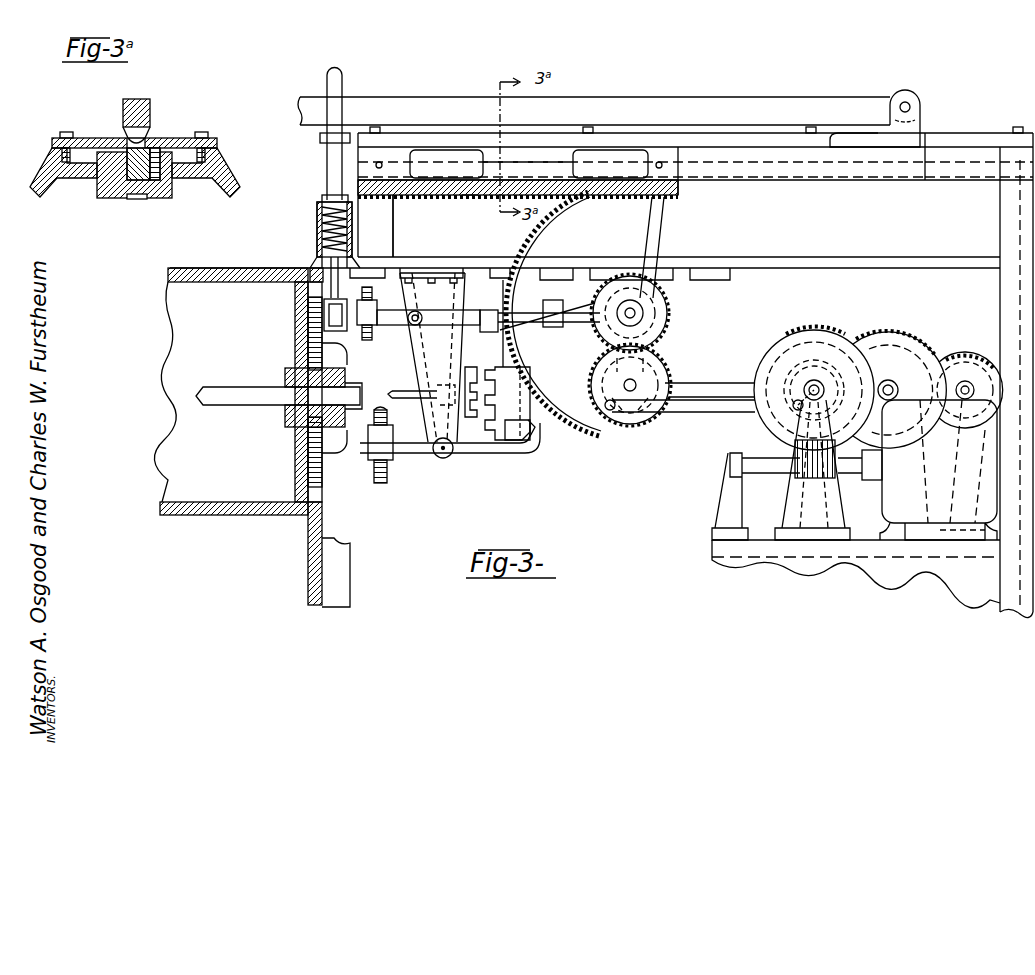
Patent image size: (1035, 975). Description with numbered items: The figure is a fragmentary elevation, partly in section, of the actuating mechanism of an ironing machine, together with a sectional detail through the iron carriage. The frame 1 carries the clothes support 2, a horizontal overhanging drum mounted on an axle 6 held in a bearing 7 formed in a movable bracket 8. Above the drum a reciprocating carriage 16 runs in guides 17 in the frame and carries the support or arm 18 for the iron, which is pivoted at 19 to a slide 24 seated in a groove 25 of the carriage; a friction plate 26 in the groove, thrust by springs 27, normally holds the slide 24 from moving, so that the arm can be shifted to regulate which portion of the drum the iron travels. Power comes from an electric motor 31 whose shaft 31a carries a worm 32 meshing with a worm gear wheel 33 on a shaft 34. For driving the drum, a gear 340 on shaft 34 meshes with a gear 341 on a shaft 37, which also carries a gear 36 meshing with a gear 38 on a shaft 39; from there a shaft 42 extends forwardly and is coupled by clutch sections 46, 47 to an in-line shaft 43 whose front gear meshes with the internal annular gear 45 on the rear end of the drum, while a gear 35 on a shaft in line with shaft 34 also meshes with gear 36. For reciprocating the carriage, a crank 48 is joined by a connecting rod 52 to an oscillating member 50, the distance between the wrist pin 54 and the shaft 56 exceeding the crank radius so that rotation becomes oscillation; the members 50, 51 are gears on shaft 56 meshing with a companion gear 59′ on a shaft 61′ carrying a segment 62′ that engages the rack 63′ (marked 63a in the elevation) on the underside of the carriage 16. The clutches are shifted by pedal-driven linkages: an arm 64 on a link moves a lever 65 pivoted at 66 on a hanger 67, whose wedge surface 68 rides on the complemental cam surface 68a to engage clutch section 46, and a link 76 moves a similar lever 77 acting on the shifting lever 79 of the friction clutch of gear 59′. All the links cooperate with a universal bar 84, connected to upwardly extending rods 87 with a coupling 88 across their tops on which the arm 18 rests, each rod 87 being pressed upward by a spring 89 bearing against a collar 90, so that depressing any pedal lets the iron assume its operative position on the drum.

In FIG. 3, the frame 1 is at (314, 563).
In FIG. 3, the clothes support 2 is at (170, 448).
In FIG. 3, the axle 6 is at (243, 396).
In FIG. 3, the bearing 7 is at (300, 428).
In FIG. 3, the movable bracket 8 is at (331, 445).
In FIG. 3A, the reciprocating carriage 16 is at (100, 185).
In FIG. 3, the reciprocating carriage 16 is at (455, 188).
In FIG. 3A, the guides 17 is at (88, 140).
In FIG. 3, the guides 17 is at (940, 146).
In FIG. 3A, the support or arm 18 is at (148, 100).
In FIG. 3, the support or arm 18 is at (603, 100).
In FIG. 3, the pivot 19 is at (906, 100).
In FIG. 3A, the slide 24 is at (110, 200).
In FIG. 3, the slide 24 is at (772, 172).
In FIG. 3A, the way or groove 25 is at (130, 150).
In FIG. 3, the way or groove 25 is at (402, 178).
In FIG. 3A, the shoe or plate 26 is at (170, 185).
In FIG. 3, the shoe or plate 26 is at (522, 153).
In FIG. 3, the springs 27 is at (432, 160).
In FIG. 3, the electric motor 31 is at (960, 512).
In FIG. 3, the shaft 31a is at (767, 470).
In FIG. 3, the worm 32 is at (806, 481).
In FIG. 3, the worm gear wheel 33 is at (793, 340).
In FIG. 3, the shaft 34 is at (816, 388).
In FIG. 3, the gear 35 is at (784, 362).
In FIG. 3, the gear 340 is at (779, 348).
In FIG. 3, the gear 341 is at (883, 332).
In FIG. 3, the gear 36 is at (905, 337).
In FIG. 3, the shaft 37 is at (893, 386).
In FIG. 3, the gear 38 is at (973, 354).
In FIG. 3, the shaft 39 is at (963, 382).
In FIG. 3, the shaft 42 is at (710, 391).
In FIG. 3, the shaft 43 is at (398, 391).
In FIG. 3, the internal annular gear 45 is at (324, 485).
In FIG. 3, the clutch section 46 is at (499, 414).
In FIG. 3, the clutch section 47 is at (462, 410).
In FIG. 3, the crank 48 is at (755, 407).
In FIG. 3, the oscillating member 50 is at (668, 368).
In FIG. 3, the oscillating member 51 is at (594, 368).
In FIG. 3, the connecting rod 52 is at (683, 417).
In FIG. 3, the wrist pin 54 is at (612, 411).
In FIG. 3, the shaft 56 is at (624, 383).
In FIG. 3, the gear 59′ is at (667, 328).
In FIG. 3, the shaft 61′ is at (640, 312).
In FIG. 3, the segment 62′ is at (538, 242).
In FIG. 3A, the rack 63′ is at (137, 200).
In FIG. 3, the rack 63a is at (468, 198).
In FIG. 3, the arm 64 is at (383, 484).
In FIG. 3, the lever 65 is at (486, 454).
In FIG. 3, the pivot 66 is at (443, 458).
In FIG. 3, the support or hanger 67 is at (432, 350).
In FIG. 3, the cam or wedge surface 68 is at (526, 434).
In FIG. 3, the complemental cam surface 68a is at (537, 433).
In FIG. 3, the link 76 is at (366, 340).
In FIG. 3, the lever 77 is at (390, 325).
In FIG. 3, the shifting lever 79 is at (530, 318).
In FIG. 3, the universal bar 84 is at (332, 315).
In FIG. 3, the rods 87 is at (328, 168).
In FIG. 3, the coupling 88 is at (320, 138).
In FIG. 3, the spring 89 is at (330, 221).
In FIG. 3, the collar 90 is at (322, 198).